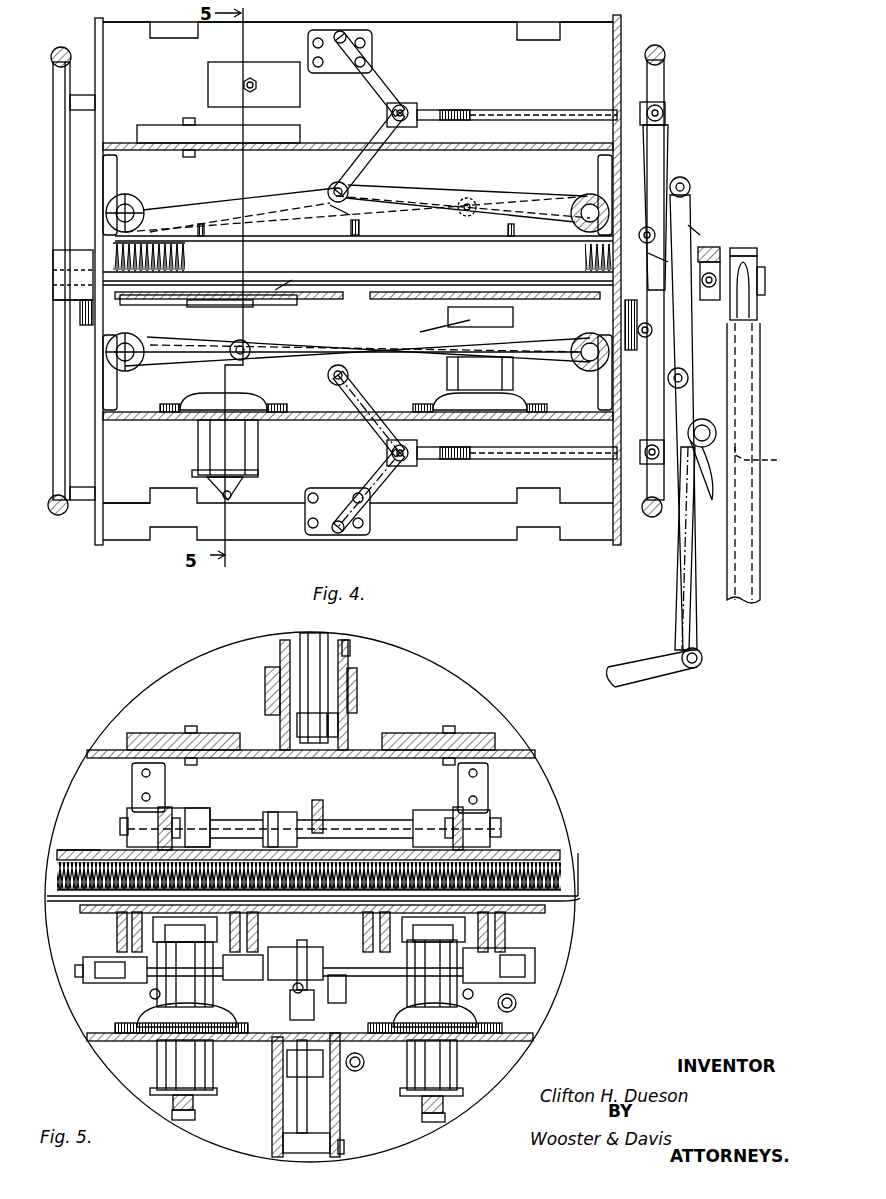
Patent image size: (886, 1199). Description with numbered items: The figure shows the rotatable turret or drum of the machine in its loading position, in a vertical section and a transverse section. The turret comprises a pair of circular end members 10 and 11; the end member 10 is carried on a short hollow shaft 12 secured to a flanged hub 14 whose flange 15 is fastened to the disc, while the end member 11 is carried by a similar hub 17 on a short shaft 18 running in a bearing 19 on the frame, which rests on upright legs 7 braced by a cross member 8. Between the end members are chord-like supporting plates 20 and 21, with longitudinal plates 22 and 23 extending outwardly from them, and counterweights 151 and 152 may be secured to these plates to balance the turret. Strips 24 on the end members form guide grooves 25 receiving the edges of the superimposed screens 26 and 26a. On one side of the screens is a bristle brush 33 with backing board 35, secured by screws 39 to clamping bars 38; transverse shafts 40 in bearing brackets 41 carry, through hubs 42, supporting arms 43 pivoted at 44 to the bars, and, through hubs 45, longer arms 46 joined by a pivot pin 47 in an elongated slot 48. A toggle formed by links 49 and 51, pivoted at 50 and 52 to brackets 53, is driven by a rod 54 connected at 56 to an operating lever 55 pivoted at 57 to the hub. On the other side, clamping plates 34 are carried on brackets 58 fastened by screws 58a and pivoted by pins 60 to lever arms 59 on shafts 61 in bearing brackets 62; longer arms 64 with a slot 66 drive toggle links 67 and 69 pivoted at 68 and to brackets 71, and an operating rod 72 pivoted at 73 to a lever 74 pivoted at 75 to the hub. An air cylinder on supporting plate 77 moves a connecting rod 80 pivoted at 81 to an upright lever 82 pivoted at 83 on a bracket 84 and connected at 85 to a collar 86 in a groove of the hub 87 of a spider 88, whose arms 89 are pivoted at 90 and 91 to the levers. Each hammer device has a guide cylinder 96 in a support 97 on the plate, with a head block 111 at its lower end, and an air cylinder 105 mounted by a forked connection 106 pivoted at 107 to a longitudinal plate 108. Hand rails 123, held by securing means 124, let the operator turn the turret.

In FIG. 4, the upright supporting legs 7 is at (760, 545).
In FIG. 4, the cross member 8 is at (764, 460).
In FIG. 4, the end member 10 is at (103, 85).
In FIG. 4, the end member 11 is at (613, 40).
In FIG. 5, the end member 11 is at (110, 727).
In FIG. 4, the short hollow shaft 12 is at (53, 268).
In FIG. 4, the flanged hub 14 is at (82, 322).
In FIG. 4, the flange 15 is at (86, 330).
In FIG. 4, the hub 17 is at (694, 192).
In FIG. 4, the short shaft 18 is at (765, 288).
In FIG. 4, the bearing 19 is at (757, 258).
In FIG. 4, the supporting plate 20 is at (540, 150).
In FIG. 5, the supporting plate 20 is at (367, 758).
In FIG. 4, the supporting plate 21 is at (495, 420).
In FIG. 5, the supporting plate 21 is at (372, 1042).
In FIG. 4, the plates 22 is at (103, 57).
In FIG. 5, the plates 22 is at (280, 718).
In FIG. 4, the longitudinal plates 23 is at (460, 530).
In FIG. 5, the longitudinal plates 23 is at (272, 1110).
In FIG. 4, the strips 24 is at (100, 240).
In FIG. 5, the strips 24 is at (578, 870).
In FIG. 4, the guide grooves 25 is at (572, 283).
In FIG. 5, the guide grooves 25 is at (582, 899).
In FIG. 4, the woven wire screen 26 is at (235, 306).
In FIG. 4, the woven wire screen 26a is at (277, 290).
In FIG. 4, the bristle brush 33 is at (185, 260).
In FIG. 5, the bristle brush 33 is at (526, 856).
In FIG. 4, the clamping plates 34 is at (230, 290).
In FIG. 5, the clamping plates 34 is at (215, 907).
In FIG. 5, the board 35 is at (104, 852).
In FIG. 4, the flat bars or clamps 38 is at (350, 243).
In FIG. 5, the flat bars or clamps 38 is at (172, 842).
In FIG. 4, the screws 39 is at (362, 228).
In FIG. 4, the transverse shafts 40 is at (136, 203).
In FIG. 5, the transverse shafts 40 is at (383, 822).
In FIG. 4, the bearing brackets 41 is at (117, 190).
In FIG. 5, the bearing brackets 41 is at (135, 806).
In FIG. 5, the hubs 42 is at (205, 812).
In FIG. 4, the supporting arms 43 is at (195, 203).
In FIG. 5, the supporting arms 43 is at (166, 807).
In FIG. 4, the pivotal connections 44 is at (268, 196).
In FIG. 5, the pivotal connections 44 is at (181, 816).
In FIG. 5, the hubs 45 is at (272, 812).
In FIG. 4, the longer arms 46 is at (427, 190).
In FIG. 5, the longer arms 46 is at (290, 812).
In FIG. 4, the pivot pin 47 is at (336, 184).
In FIG. 4, the elongated slot 48 is at (332, 216).
In FIG. 4, the toggle link 49 is at (367, 135).
In FIG. 5, the toggle link 49 is at (338, 736).
In FIG. 4, the pivotal connection 50 is at (410, 107).
In FIG. 5, the pivotal connection 50 is at (297, 730).
In FIG. 4, the toggle link 51 is at (384, 84).
In FIG. 5, the toggle link 51 is at (318, 642).
In FIG. 4, the pivotal connection 52 is at (340, 44).
In FIG. 5, the pivotal connection 52 is at (360, 648).
In FIG. 4, the brackets 53 is at (372, 50).
In FIG. 4, the rod 54 is at (500, 110).
In FIG. 4, the operating lever 55 is at (656, 140).
In FIG. 4, the pivotal connection 56 is at (665, 108).
In FIG. 4, the pivot 57 is at (644, 228).
In FIG. 4, the supporting and clamping brackets 58 is at (300, 366).
In FIG. 5, the supporting and clamping brackets 58 is at (117, 930).
In FIG. 4, the screws 58a is at (455, 324).
In FIG. 4, the lever arm 59 is at (175, 370).
In FIG. 5, the lever arm 59 is at (120, 981).
In FIG. 4, the transverse pivot pin 60 is at (248, 344).
In FIG. 5, the transverse pivot pin 60 is at (96, 983).
In FIG. 4, the transverse shafts 61 is at (112, 360).
In FIG. 5, the transverse shafts 61 is at (83, 968).
In FIG. 4, the bearing brackets 62 is at (113, 384).
In FIG. 5, the bearing brackets 62 is at (346, 990).
In FIG. 4, the lever arm 64 is at (407, 382).
In FIG. 5, the lever arm 64 is at (345, 950).
In FIG. 4, the elongated slot 66 is at (335, 368).
In FIG. 5, the elongated slot 66 is at (293, 991).
In FIG. 4, the toggle link 67 is at (372, 432).
In FIG. 5, the toggle link 67 is at (304, 1012).
In FIG. 4, the pivotal connection 68 is at (405, 463).
In FIG. 5, the pivotal connection 68 is at (287, 1065).
In FIG. 4, the toggle link 69 is at (370, 460).
In FIG. 5, the toggle link 69 is at (297, 1096).
In FIG. 4, the brackets 71 is at (332, 480).
In FIG. 4, the operating rod 72 is at (515, 462).
In FIG. 4, the pivot 73 is at (660, 445).
In FIG. 4, the lever 74 is at (640, 396).
In FIG. 4, the pivot 75 is at (645, 323).
In FIG. 4, the supporting plate 77 is at (336, 533).
In FIG. 5, the supporting plate 77 is at (346, 1148).
In FIG. 4, the connecting rod 80 is at (635, 686).
In FIG. 4, the pivot 81 is at (694, 668).
In FIG. 4, the upright lever 82 is at (682, 576).
In FIG. 4, the pivot 83 is at (716, 433).
In FIG. 4, the bracket 84 is at (715, 500).
In FIG. 4, the pivotal connection 85 is at (745, 250).
In FIG. 4, the collar 86 is at (712, 273).
In FIG. 4, the hub 87 is at (712, 248).
In FIG. 4, the spider 88 is at (708, 233).
In FIG. 4, the arms 89 is at (650, 252).
In FIG. 4, the pivot 90 is at (688, 180).
In FIG. 4, the pivot 91 is at (687, 381).
In FIG. 4, the guide cylinder 96 is at (513, 383).
In FIG. 5, the guide cylinder 96 is at (170, 1003).
In FIG. 4, the support 97 is at (205, 405).
In FIG. 5, the support 97 is at (226, 1011).
In FIG. 4, the air cylinder 105 is at (198, 457).
In FIG. 4, the forked connection 106 is at (218, 497).
In FIG. 4, the pivot 107 is at (229, 500).
In FIG. 5, the pivot 107 is at (175, 1112).
In FIG. 4, the longitudinal plate 108 is at (130, 504).
In FIG. 5, the longitudinal plate 108 is at (185, 1122).
In FIG. 4, the head or block 111 is at (513, 318).
In FIG. 4, the hand rail 123 is at (50, 60).
In FIG. 4, the securing means 124 is at (76, 505).
In FIG. 4, the counterweight 151 is at (258, 135).
In FIG. 5, the counterweight 151 is at (158, 733).
In FIG. 4, the counterweight 152 is at (275, 65).
In FIG. 5, the counterweight 152 is at (265, 678).